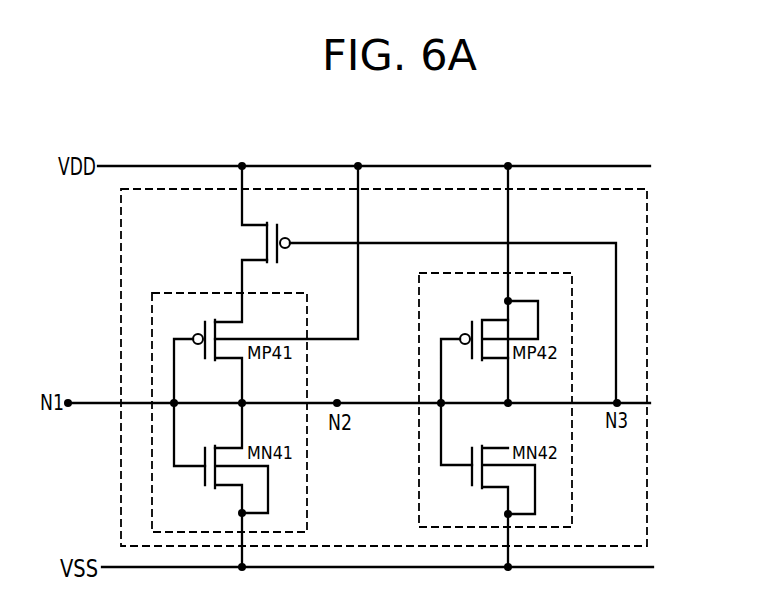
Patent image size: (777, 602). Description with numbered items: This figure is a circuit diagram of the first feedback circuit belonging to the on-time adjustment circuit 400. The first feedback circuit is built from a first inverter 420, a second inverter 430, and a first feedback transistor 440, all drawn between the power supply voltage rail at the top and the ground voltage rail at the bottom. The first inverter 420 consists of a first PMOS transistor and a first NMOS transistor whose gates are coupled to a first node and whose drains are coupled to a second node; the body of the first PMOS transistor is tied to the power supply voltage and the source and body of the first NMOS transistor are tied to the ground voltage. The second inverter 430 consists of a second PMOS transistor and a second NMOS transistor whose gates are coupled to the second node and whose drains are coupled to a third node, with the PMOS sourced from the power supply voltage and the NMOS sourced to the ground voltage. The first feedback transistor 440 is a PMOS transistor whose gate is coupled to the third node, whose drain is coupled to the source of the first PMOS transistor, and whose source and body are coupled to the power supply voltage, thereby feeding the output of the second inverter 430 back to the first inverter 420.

The on-time adjustment circuit 400 is at (647, 278).
The first inverter 420 is at (307, 493).
The second inverter 430 is at (572, 494).
The first feedback transistor 440 is at (268, 263).